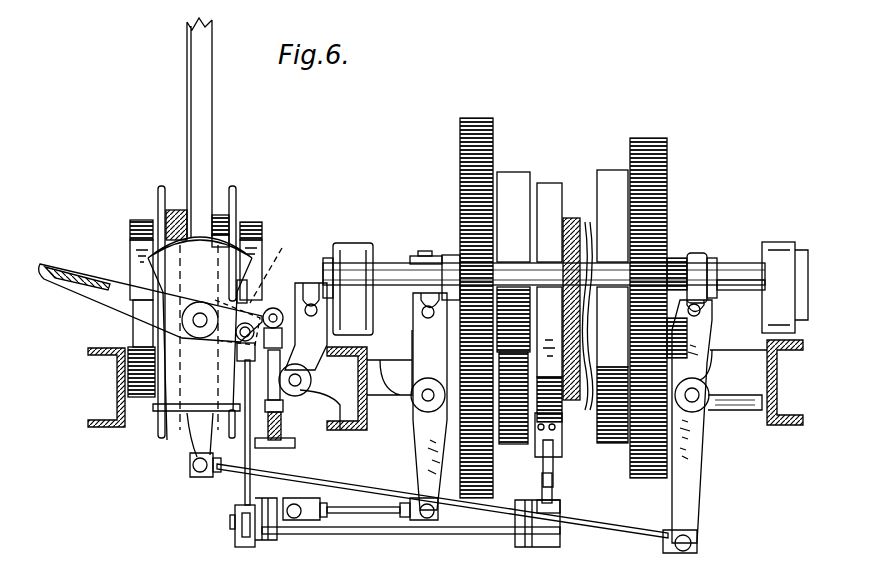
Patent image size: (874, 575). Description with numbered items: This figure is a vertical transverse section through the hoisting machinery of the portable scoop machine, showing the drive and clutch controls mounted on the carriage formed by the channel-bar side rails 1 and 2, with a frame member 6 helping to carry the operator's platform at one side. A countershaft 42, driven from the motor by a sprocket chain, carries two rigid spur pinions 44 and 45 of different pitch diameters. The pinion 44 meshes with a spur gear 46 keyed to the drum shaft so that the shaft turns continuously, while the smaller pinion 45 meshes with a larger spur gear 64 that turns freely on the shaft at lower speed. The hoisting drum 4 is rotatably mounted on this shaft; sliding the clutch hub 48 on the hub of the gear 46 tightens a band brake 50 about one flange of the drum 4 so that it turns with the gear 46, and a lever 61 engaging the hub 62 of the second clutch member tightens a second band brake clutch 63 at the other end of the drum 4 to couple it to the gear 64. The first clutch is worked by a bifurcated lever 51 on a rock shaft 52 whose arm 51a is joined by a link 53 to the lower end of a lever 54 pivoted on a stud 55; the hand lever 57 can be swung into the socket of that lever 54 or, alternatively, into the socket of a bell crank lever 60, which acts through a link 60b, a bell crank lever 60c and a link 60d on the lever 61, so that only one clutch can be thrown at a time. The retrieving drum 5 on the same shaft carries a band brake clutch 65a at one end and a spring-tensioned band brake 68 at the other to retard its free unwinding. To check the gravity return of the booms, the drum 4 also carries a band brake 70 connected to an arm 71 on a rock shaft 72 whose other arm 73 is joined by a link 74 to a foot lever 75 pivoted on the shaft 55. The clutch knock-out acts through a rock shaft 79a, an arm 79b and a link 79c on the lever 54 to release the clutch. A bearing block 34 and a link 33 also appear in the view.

The side rail 1 is at (364, 370).
The side rail 2 is at (775, 423).
The hoisting drum 4 is at (591, 220).
The retrieving drum 5 is at (160, 195).
The frame member 6 is at (117, 400).
The link 33 is at (562, 415).
The bearing block 34 is at (176, 210).
The countershaft 42 is at (393, 268).
The spur pinion 44 is at (667, 242).
The spur pinion 45 is at (455, 260).
The spur gear 46 is at (650, 140).
The clutch hub 48 is at (709, 262).
The band brake 50 is at (608, 180).
The lever 51 is at (697, 369).
The arm 51a is at (695, 490).
The rock shaft 52 is at (695, 400).
The link 53 is at (626, 538).
The lever 54 is at (198, 442).
The stud 55 is at (200, 318).
The hand lever 57 is at (196, 84).
The bell crank lever 60 is at (250, 303).
The link 60b is at (273, 306).
The bell crank lever 60c is at (285, 438).
The link 60d is at (362, 508).
The lever 61 is at (423, 431).
The clutch hub 62 is at (458, 249).
The band brake clutch 63 is at (513, 175).
The spur gear 64 is at (462, 142).
The band brake clutch 65a is at (250, 226).
The band brake 68 is at (142, 216).
The band brake 70 is at (548, 183).
The arm 71 is at (556, 490).
The rock shaft 72 is at (406, 535).
The arm 73 is at (244, 547).
The link 74 is at (243, 488).
The foot lever 75 is at (82, 268).
The rock shaft 79a is at (238, 350).
The arm 79b is at (278, 445).
The link 79c is at (297, 395).